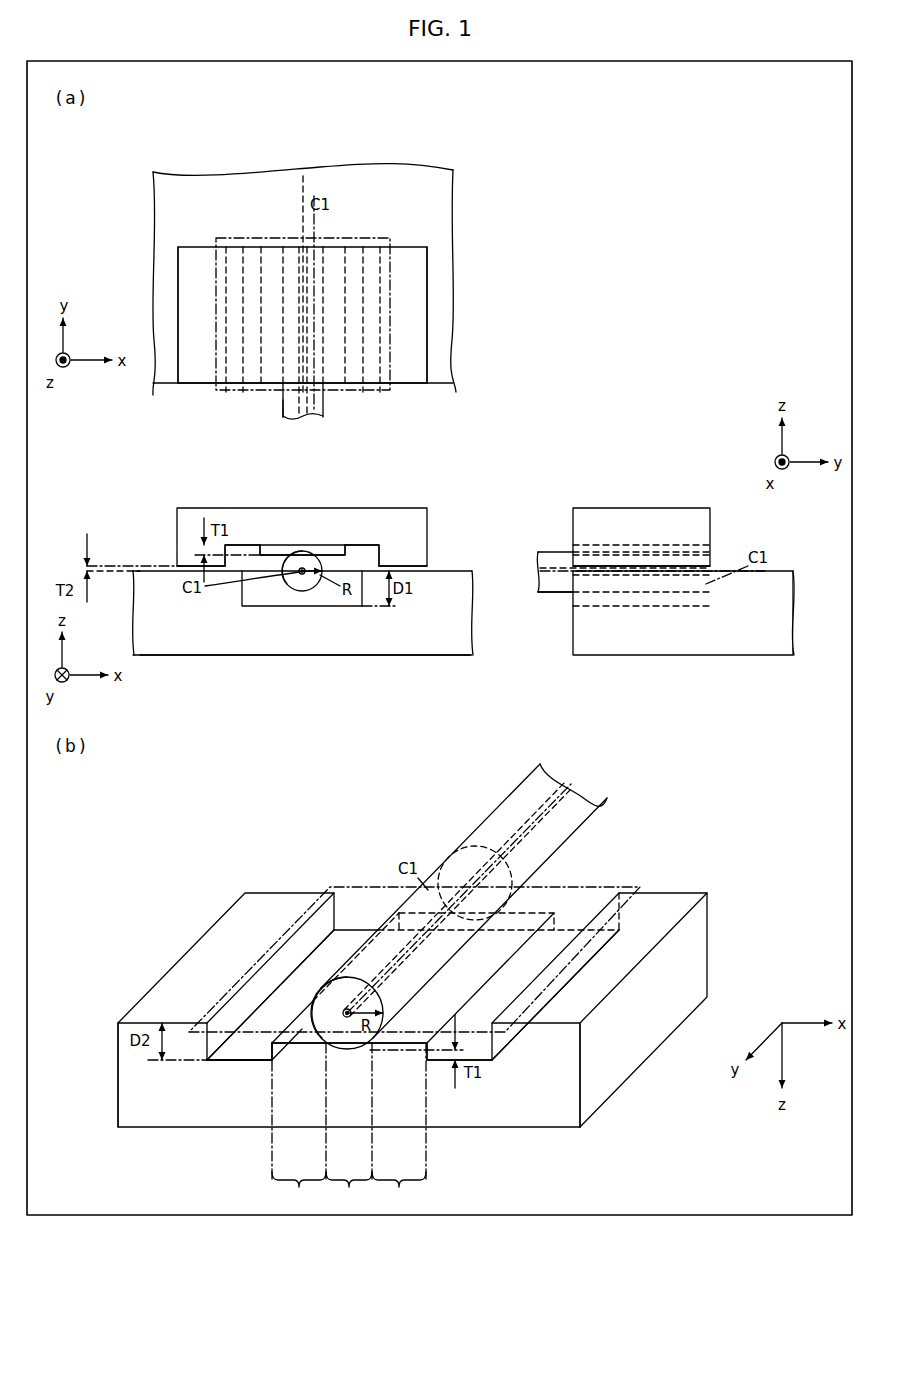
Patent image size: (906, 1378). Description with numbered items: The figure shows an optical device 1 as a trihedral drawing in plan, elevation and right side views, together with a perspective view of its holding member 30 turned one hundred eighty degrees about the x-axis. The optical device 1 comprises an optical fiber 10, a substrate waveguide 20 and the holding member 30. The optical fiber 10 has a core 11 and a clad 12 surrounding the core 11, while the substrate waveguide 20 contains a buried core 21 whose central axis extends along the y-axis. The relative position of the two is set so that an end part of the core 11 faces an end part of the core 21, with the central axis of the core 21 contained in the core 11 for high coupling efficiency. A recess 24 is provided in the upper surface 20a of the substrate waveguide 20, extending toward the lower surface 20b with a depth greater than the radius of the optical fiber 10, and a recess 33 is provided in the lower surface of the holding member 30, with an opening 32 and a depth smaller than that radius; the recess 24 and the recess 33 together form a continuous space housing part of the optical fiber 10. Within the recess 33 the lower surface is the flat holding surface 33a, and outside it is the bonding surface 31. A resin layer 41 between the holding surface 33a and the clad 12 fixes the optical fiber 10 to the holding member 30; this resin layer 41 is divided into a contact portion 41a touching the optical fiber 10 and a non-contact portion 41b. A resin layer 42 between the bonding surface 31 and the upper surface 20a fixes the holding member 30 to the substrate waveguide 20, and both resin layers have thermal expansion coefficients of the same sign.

The optical device 1 is at (470, 166).
The optical fiber 10 is at (330, 397).
The core 11 is at (273, 405).
The clad 12 is at (285, 404).
The substrate waveguide 20 is at (468, 260).
The upper surface 20a is at (433, 215).
The lower surface 20b is at (157, 656).
The core 21 is at (303, 176).
The recess 24 is at (252, 392).
The holding member 30 is at (444, 295).
The bonding surface 31 is at (192, 304).
The opening 32 is at (375, 240).
The recess 33 is at (232, 392).
The holding surface 33a is at (229, 1062).
The resin layer 41 is at (254, 545).
The contact portion 41a is at (349, 1124).
The non-contact portion 41b is at (349, 1124).
The resin layer 42 is at (428, 566).